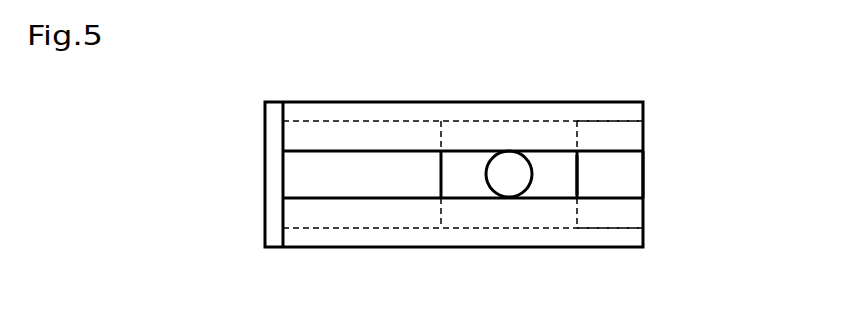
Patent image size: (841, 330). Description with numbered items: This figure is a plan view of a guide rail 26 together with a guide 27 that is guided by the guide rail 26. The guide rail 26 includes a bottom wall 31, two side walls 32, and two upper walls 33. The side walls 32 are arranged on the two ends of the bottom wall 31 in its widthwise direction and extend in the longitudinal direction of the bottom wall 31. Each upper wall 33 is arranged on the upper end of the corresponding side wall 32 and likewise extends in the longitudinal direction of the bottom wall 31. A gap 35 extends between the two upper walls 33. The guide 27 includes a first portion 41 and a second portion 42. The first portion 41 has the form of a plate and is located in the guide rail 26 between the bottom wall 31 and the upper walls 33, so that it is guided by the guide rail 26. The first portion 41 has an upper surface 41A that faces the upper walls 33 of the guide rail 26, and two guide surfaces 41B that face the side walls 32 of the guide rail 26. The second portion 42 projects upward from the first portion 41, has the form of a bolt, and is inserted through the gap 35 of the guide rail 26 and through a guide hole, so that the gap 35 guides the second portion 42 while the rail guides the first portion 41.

The guide rail 26 is at (296, 97).
The guide 27 is at (586, 185).
The bottom wall 31 is at (357, 178).
The side wall 32 is at (350, 100).
The upper wall 33 is at (628, 135).
The gap 35 is at (627, 152).
The first portion 41 is at (582, 166).
The upper surface 41A is at (462, 157).
The guide surface 41B is at (486, 121).
The second portion 42 is at (535, 162).